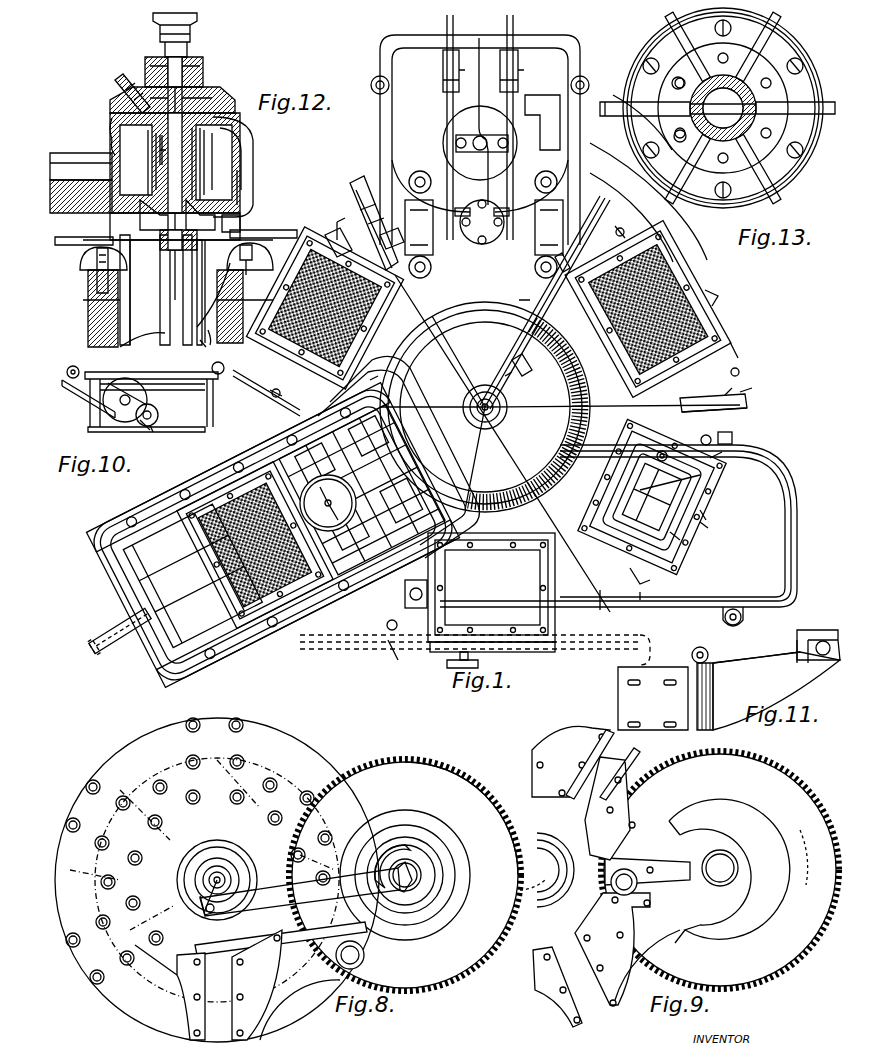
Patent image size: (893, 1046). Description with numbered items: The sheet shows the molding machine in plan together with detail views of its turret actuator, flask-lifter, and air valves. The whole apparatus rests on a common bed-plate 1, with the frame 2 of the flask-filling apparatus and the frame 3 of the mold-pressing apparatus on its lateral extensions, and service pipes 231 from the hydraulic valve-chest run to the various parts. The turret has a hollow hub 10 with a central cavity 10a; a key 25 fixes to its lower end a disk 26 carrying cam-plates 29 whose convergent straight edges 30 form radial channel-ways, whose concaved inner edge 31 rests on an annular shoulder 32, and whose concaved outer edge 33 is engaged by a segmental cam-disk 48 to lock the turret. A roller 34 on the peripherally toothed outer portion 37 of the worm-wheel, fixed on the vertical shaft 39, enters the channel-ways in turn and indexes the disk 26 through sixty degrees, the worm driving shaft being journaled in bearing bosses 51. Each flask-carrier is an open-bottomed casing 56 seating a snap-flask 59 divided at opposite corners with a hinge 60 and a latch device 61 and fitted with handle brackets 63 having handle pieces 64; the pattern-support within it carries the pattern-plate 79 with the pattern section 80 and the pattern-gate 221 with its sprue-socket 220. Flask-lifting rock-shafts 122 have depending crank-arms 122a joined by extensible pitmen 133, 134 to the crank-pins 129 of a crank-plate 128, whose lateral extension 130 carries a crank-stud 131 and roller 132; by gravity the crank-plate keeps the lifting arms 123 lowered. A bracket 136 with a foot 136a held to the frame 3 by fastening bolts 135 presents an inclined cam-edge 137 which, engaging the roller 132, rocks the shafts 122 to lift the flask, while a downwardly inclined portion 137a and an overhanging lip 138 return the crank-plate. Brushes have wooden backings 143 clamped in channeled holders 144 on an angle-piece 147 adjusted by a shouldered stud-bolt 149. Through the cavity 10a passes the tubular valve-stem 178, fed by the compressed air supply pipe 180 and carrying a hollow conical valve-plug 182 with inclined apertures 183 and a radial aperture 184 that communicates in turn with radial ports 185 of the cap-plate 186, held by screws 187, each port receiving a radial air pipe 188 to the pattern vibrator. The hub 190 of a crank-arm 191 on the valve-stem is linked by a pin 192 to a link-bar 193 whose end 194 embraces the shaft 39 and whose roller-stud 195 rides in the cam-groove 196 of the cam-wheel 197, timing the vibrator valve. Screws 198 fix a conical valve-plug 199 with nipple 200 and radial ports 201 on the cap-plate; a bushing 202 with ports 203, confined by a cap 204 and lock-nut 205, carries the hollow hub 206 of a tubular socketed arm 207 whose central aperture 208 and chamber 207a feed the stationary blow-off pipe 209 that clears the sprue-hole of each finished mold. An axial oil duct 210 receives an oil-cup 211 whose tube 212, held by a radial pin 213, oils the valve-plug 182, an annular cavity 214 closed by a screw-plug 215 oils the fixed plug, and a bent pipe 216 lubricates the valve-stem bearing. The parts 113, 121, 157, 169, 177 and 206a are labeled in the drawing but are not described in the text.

In FIG. 1, the bed-plate 1 is at (185, 572).
In FIG. 1, the frame of the flask-filling apparatus 2 is at (246, 448).
In FIG. 1, the frame of the mold-pressing apparatus 3 is at (412, 165).
In FIG. 12, the hollow hub 10 is at (88, 325).
In FIG. 12, the central cavity 10a is at (167, 292).
In FIG. 8, the key 25 is at (217, 880).
In FIG. 8, the disk 26 is at (155, 945).
In FIG. 8, the cam-plates 29 is at (257, 985).
In FIG. 9, the cam-plates 29 is at (591, 866).
In FIG. 8, the convergent straight edges 30 is at (205, 992).
In FIG. 9, the convergent straight edges 30 is at (598, 790).
In FIG. 8, the concaved inner edge 31 is at (320, 922).
In FIG. 9, the concaved inner edge 31 is at (555, 800).
In FIG. 8, the annular shoulder 32 is at (177, 974).
In FIG. 8, the concaved outer edge 33 is at (268, 995).
In FIG. 9, the concaved outer edge 33 is at (636, 936).
In FIG. 8, the roller 34 is at (358, 965).
In FIG. 9, the roller 34 is at (630, 870).
In FIG. 8, the peripherally toothed outer portion 37 is at (461, 857).
In FIG. 9, the peripherally toothed outer portion 37 is at (795, 879).
In FIG. 8, the vertical shaft 39 is at (418, 876).
In FIG. 8, the segmental cam-disk 48 is at (465, 866).
In FIG. 9, the segmental cam-disk 48 is at (758, 822).
In FIG. 1, the bearing bosses 51 is at (322, 238).
In FIG. 10, the flask-carrier 56 is at (152, 396).
In FIG. 1, the snap-flask 59 is at (282, 300).
In FIG. 1, the hinge 60 is at (560, 300).
In FIG. 1, the latch device 61 is at (682, 540).
In FIG. 1, the handle brackets 63 is at (440, 309).
In FIG. 1, the handle pieces 64 is at (405, 585).
In FIG. 1, the pattern-plate 79 is at (690, 478).
In FIG. 1, the pattern section 80 is at (700, 494).
In FIG. 1, the rods 113 is at (352, 186).
In FIG. 1, the block 121 is at (735, 434).
In FIG. 10, the flask-lifting rock-shafts 122 is at (73, 366).
In FIG. 1, the flask-lifting rock-shafts 122 is at (395, 620).
In FIG. 10, the depending crank-arm 122a is at (150, 371).
In FIG. 1, the depending crank-arm 122a is at (496, 372).
In FIG. 12, the lifting arms 123 is at (162, 210).
In FIG. 10, the crank-plate 128 is at (137, 394).
In FIG. 10, the crank-pins 129 is at (128, 378).
In FIG. 10, the lateral extension 130 is at (158, 415).
In FIG. 10, the crank-stud 131 is at (155, 430).
In FIG. 1, the crank-stud 131 is at (480, 660).
In FIG. 12, the roller 132 is at (252, 262).
In FIG. 10, the roller 132 is at (142, 428).
In FIG. 11, the roller 132 is at (692, 656).
In FIG. 1, the roller 132 is at (450, 652).
In FIG. 10, the extensible pitman 133 is at (75, 392).
In FIG. 1, the extensible pitman 133 is at (650, 582).
In FIG. 10, the extensible pitman 134 is at (165, 372).
In FIG. 13, the fastening bolts 135 is at (612, 102).
In FIG. 1, the fastening bolts 135 is at (618, 158).
In FIG. 11, the bracket 136 is at (768, 691).
In FIG. 1, the bracket 136 is at (652, 200).
In FIG. 11, the foot 136a is at (653, 698).
In FIG. 11, the cam-edge 137 is at (745, 660).
In FIG. 1, the cam-edge 137 is at (676, 245).
In FIG. 11, the downwardly inclined portion 137a is at (808, 660).
In FIG. 11, the overhanging lip 138 is at (815, 630).
In FIG. 1, the overhanging lip 138 is at (718, 300).
In FIG. 1, the wooden backings 143 is at (747, 402).
In FIG. 1, the channeled holders 144 is at (354, 195).
In FIG. 1, the angle-piece 147 is at (372, 195).
In FIG. 1, the shouldered stud-bolt 149 is at (366, 220).
In FIG. 1, the clamp 157 is at (384, 240).
In FIG. 1, the pin 169 is at (370, 379).
In FIG. 1, the gauge 177 is at (364, 342).
In FIG. 12, the tubular valve-stem 178 is at (175, 305).
In FIG. 13, the tubular valve-stem 178 is at (723, 108).
In FIG. 12, the compressed air supply pipe 180 is at (80, 258).
In FIG. 12, the hollow conical valve-plug 182 is at (178, 240).
In FIG. 13, the hollow conical valve-plug 182 is at (725, 78).
In FIG. 12, the divergently inclined apertures 183 is at (215, 205).
In FIG. 12, the radial aperture 184 is at (180, 270).
In FIG. 13, the radial aperture 184 is at (688, 85).
In FIG. 12, the radial ports 185 is at (145, 262).
In FIG. 13, the radial ports 185 is at (690, 142).
In FIG. 13, the cap-plate 186 is at (723, 89).
In FIG. 12, the screws 187 is at (97, 283).
In FIG. 13, the screws 187 is at (731, 28).
In FIG. 12, the radial air pipe 188 is at (75, 237).
In FIG. 13, the radial air pipe 188 is at (668, 28).
In FIG. 8, the hub 190 is at (216, 866).
In FIG. 9, the hub 190 is at (547, 870).
In FIG. 8, the crank-arm 191 is at (203, 912).
In FIG. 8, the pin 192 is at (210, 915).
In FIG. 8, the link-bar 193 is at (300, 892).
In FIG. 8, the end of link-bar 194 is at (405, 875).
In FIG. 8, the roller-stud 195 is at (370, 882).
In FIG. 8, the cam-groove 196 is at (400, 905).
In FIG. 9, the cam-groove 196 is at (722, 848).
In FIG. 8, the cam-wheel 197 is at (410, 835).
In FIG. 12, the screws 198 is at (230, 230).
In FIG. 12, the conical valve-plug 199 is at (210, 185).
In FIG. 12, the nipple 200 is at (184, 57).
In FIG. 12, the radial ports 201 is at (148, 150).
In FIG. 12, the bushing 202 is at (240, 140).
In FIG. 12, the radial ports 203 is at (241, 150).
In FIG. 12, the cap 204 is at (216, 97).
In FIG. 12, the lock-nut 205 is at (203, 65).
In FIG. 12, the hollow hub 206 is at (240, 172).
In FIG. 1, the hollow hub 206 is at (485, 385).
In FIG. 12, the wall 206a is at (112, 125).
In FIG. 12, the tubular socketed arm 207 is at (70, 170).
In FIG. 1, the tubular socketed arm 207 is at (524, 367).
In FIG. 12, the chamber 207a is at (115, 148).
In FIG. 12, the central aperture 208 is at (81, 196).
In FIG. 1, the blow-off pipe 209 is at (588, 230).
In FIG. 12, the axial oil duct 210 is at (198, 78).
In FIG. 12, the oil-cup 211 is at (160, 32).
In FIG. 1, the oil-cup 211 is at (520, 383).
In FIG. 12, the tube 212 is at (128, 118).
In FIG. 12, the radial pin 213 is at (160, 158).
In FIG. 12, the annular cavity 214 is at (214, 108).
In FIG. 12, the screw-plug 215 is at (118, 82).
In FIG. 12, the bent pipe 216 is at (200, 342).
In FIG. 1, the sprue-socket 220 is at (712, 462).
In FIG. 1, the pattern-gate 221 is at (657, 456).
In FIG. 1, the service pipes 231 is at (642, 628).